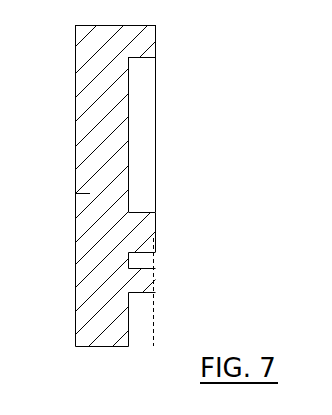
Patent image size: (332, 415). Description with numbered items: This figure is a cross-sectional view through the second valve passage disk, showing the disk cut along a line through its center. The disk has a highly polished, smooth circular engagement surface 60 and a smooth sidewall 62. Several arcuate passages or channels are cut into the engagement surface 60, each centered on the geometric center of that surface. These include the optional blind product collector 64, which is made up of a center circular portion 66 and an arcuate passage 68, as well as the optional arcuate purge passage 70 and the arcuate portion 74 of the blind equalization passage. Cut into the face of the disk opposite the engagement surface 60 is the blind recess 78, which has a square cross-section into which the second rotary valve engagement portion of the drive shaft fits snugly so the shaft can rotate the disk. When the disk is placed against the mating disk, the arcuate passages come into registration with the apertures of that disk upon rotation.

The sidewall 62 is at (128, 26).
The arcuate passage 68 is at (143, 72).
The blind product collector 64 is at (140, 126).
The center circular portion 66 is at (140, 186).
The engagement surface 60 is at (150, 238).
The arcuate portion 74 is at (138, 257).
The arcuate purge passage 70 is at (140, 314).
The blind recess 78 is at (83, 194).